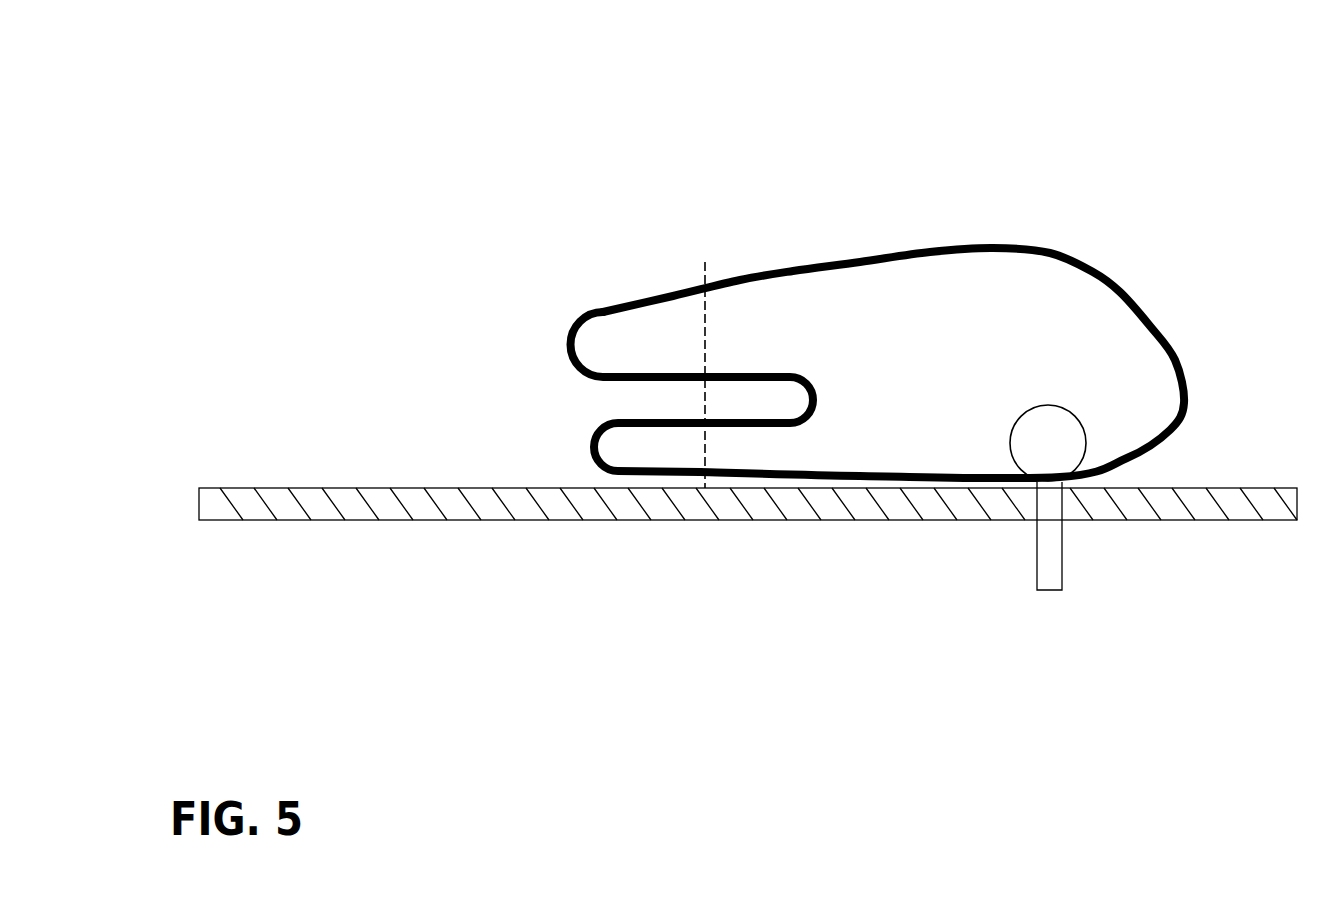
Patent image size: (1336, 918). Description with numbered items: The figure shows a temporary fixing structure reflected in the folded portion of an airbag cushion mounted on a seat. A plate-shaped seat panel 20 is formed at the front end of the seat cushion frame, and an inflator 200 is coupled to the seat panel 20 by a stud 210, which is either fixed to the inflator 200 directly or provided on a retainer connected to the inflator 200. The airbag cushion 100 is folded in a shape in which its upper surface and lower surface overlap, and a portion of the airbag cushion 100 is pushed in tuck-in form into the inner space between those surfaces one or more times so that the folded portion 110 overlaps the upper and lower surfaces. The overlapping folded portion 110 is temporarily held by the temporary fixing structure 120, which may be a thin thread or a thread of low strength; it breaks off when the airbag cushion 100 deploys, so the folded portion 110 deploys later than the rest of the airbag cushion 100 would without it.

The seat panel 20 is at (452, 521).
The airbag cushion 100 is at (968, 243).
The folded portion 110 is at (548, 365).
The temporary fixing structure 120 is at (707, 327).
The inflator 200 is at (1053, 425).
The stud 210 is at (1043, 568).